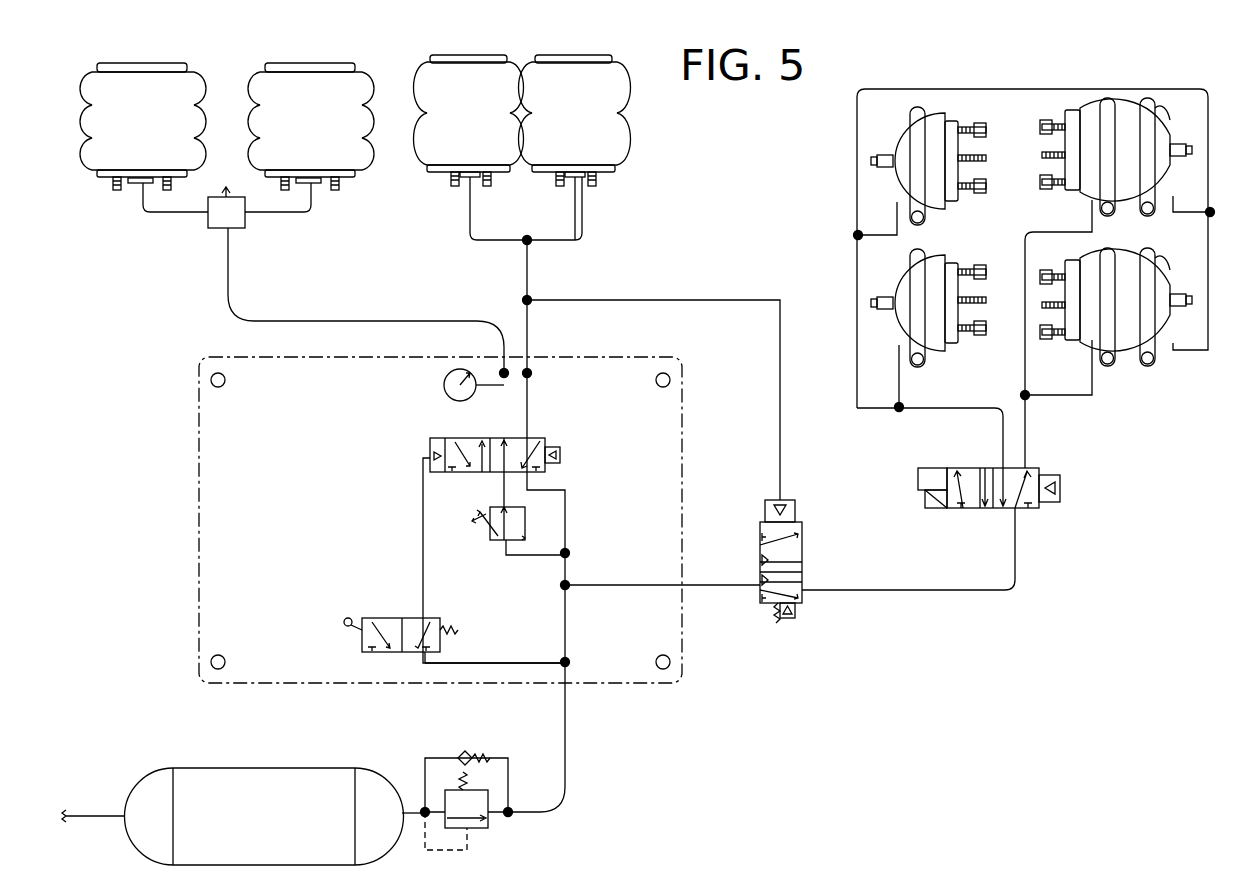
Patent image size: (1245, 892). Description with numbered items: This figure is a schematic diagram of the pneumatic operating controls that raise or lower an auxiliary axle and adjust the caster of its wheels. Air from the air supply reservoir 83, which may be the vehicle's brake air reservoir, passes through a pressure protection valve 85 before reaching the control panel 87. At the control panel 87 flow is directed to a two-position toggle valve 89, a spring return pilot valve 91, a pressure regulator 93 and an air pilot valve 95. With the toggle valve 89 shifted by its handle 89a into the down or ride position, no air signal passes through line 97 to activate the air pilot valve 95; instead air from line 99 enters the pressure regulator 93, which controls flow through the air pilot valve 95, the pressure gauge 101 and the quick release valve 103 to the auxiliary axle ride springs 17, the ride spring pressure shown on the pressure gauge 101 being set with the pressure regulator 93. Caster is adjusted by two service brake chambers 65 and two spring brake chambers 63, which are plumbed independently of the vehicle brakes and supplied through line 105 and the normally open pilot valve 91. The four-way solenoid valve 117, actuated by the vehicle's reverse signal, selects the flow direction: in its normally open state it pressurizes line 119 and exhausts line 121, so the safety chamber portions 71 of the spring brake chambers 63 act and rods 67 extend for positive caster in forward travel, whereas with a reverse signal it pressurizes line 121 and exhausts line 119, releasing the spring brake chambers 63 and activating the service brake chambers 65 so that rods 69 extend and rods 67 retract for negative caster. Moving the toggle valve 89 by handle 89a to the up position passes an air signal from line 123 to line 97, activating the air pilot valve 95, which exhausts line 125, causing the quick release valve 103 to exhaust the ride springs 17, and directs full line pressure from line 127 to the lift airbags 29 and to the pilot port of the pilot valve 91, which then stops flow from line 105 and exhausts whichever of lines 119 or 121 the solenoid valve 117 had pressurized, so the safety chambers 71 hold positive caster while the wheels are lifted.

The auxiliary axle ride springs 17 is at (130, 120).
The lift airbags 29 is at (442, 88).
The spring brake chambers 63 is at (1128, 122).
The service brake chambers 65 is at (922, 125).
The rods 67 is at (1042, 155).
The rods 69 is at (986, 158).
The safety chamber portions 71 is at (1160, 126).
The air supply reservoir 83 is at (283, 802).
The pressure protection valve 85 is at (510, 826).
The control panel 87 is at (685, 655).
The two-position toggle valve 89 is at (430, 625).
The handle 89a is at (353, 625).
The spring return pilot valve 91 is at (802, 525).
The pressure regulator 93 is at (498, 540).
The air pilot valve 95 is at (540, 438).
The line 97 is at (423, 522).
The line 99 is at (536, 556).
The pressure gauge 101 is at (450, 398).
The quick release valve 103 is at (230, 215).
The line 105 is at (598, 585).
The 4-way solenoid valve 117 is at (937, 476).
The line 119 is at (1025, 440).
The line 121 is at (925, 408).
The line 123 is at (468, 663).
The line 125 is at (355, 321).
The line 127 is at (565, 502).